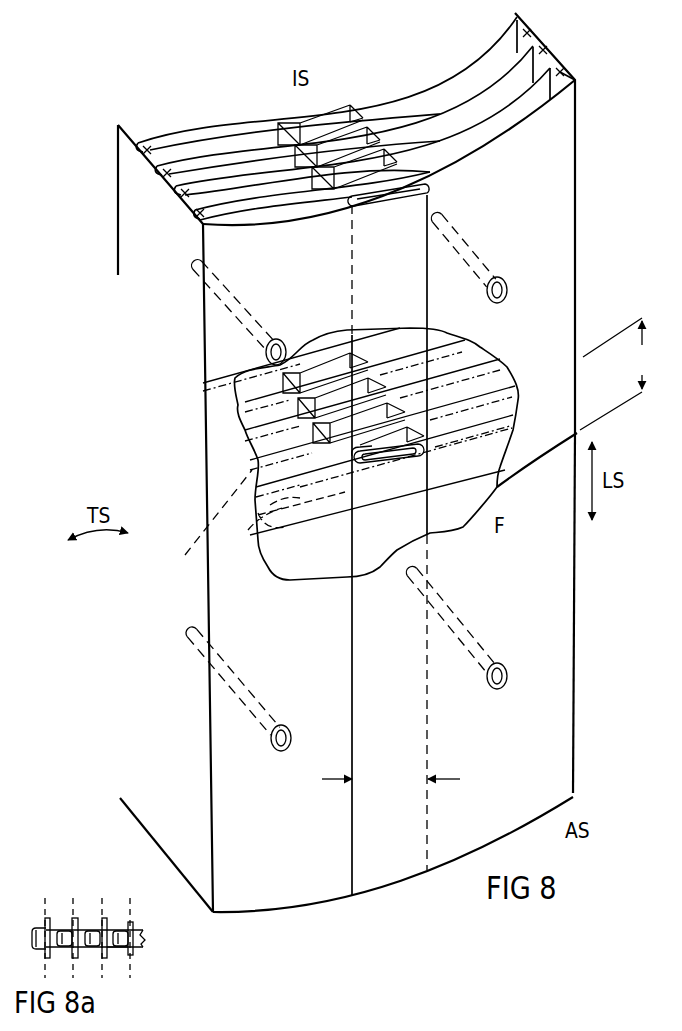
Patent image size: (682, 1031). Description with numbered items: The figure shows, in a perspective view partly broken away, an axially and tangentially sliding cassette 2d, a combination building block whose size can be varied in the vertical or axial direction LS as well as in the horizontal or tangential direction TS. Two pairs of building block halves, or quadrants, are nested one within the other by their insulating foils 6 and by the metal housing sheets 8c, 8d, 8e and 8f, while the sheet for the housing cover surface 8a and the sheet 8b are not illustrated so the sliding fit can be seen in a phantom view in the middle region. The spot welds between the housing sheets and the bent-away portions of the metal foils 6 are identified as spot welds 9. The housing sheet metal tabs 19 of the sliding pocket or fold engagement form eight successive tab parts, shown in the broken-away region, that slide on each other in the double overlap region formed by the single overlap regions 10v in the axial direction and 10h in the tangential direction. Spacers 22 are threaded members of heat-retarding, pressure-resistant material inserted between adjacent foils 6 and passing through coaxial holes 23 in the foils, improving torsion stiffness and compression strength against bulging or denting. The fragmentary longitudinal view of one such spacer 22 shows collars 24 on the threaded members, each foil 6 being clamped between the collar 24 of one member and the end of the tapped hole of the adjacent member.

In FIG. 8, the insulating foil 6 is at (493, 438).
In FIG. 8A, the insulating foil 6 is at (102, 917).
In FIG. 8, the housing cover surface 8a is at (218, 124).
In FIG. 8, the metal housing sheet 8b is at (302, 932).
In FIG. 8, the metal housing sheet 8c is at (133, 190).
In FIG. 8, the metal housing sheet 8d is at (546, 573).
In FIG. 8, the metal housing sheet 8e is at (152, 282).
In FIG. 8, the metal housing sheet 8f is at (564, 262).
In FIG. 8, the spot weld 9 is at (529, 34).
In FIG. 8, the housing sheet metal tab 19 is at (375, 195).
In FIG. 8, the spacer 22 is at (222, 282).
In FIG. 8A, the spacer 22 is at (112, 958).
In FIG. 8, the sliding cassette 2d is at (108, 644).
In FIG. 8, the overlap region 10v is at (270, 536).
In FIG. 8, the overlap region 10h is at (391, 782).
In FIG. 8A, the coaxial hole 23 is at (124, 928).
In FIG. 8A, the collar 24 is at (131, 957).